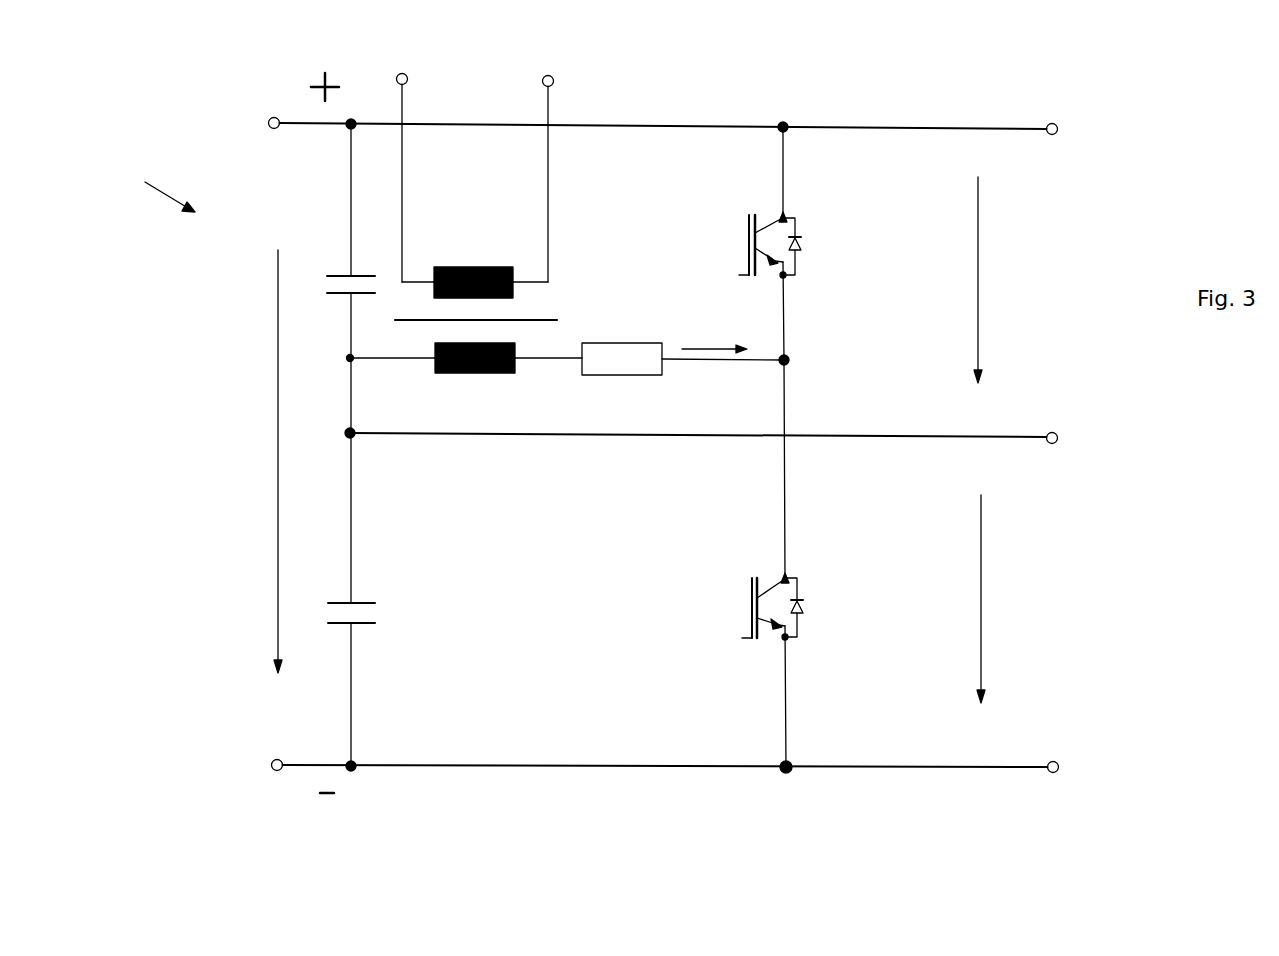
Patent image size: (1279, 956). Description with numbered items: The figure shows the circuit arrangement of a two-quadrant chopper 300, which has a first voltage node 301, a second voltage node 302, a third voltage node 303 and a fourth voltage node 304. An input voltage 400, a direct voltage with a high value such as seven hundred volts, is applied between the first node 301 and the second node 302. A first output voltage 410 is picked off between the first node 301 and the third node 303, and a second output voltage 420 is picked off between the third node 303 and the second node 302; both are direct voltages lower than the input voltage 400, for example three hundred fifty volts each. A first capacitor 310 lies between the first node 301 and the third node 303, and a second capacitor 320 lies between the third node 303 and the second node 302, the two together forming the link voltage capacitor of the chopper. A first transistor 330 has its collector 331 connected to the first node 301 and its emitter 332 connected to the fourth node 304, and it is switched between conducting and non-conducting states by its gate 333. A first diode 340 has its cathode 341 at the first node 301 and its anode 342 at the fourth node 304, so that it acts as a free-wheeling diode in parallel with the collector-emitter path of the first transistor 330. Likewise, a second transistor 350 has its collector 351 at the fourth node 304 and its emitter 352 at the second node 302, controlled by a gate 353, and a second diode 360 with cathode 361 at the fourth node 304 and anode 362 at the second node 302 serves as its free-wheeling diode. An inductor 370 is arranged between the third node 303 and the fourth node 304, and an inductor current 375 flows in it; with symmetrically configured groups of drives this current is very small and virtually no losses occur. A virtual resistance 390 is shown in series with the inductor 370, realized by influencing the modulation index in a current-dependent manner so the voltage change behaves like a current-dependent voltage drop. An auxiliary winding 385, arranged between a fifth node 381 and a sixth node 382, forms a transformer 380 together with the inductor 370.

The two-quadrant chopper 300 is at (143, 185).
The first voltage node 301 is at (270, 120).
The second voltage node 302 is at (270, 772).
The third voltage node 303 is at (355, 438).
The fourth voltage node 304 is at (789, 361).
The first capacitor 310 is at (345, 272).
The second capacitor 320 is at (345, 627).
The first transistor 330 is at (708, 245).
The collector 331 is at (773, 223).
The emitter 332 is at (778, 263).
The gate 333 is at (744, 276).
The first diode 340 is at (842, 237).
The cathode 341 is at (797, 230).
The anode 342 is at (795, 252).
The second transistor 350 is at (717, 630).
The collector 351 is at (770, 587).
The emitter 352 is at (780, 633).
The gate 353 is at (750, 647).
The second diode 360 is at (848, 593).
The cathode 361 is at (807, 580).
The anode 362 is at (803, 617).
The inductor 370 is at (463, 375).
The inductor current 375 is at (710, 347).
The transformer 380 is at (543, 318).
The fifth node 381 is at (410, 76).
The sixth node 382 is at (555, 77).
The auxiliary winding 385 is at (500, 267).
The virtual resistance 390 is at (637, 375).
The input voltage 400 is at (278, 538).
The first output voltage 410 is at (978, 257).
The second output voltage 420 is at (982, 587).